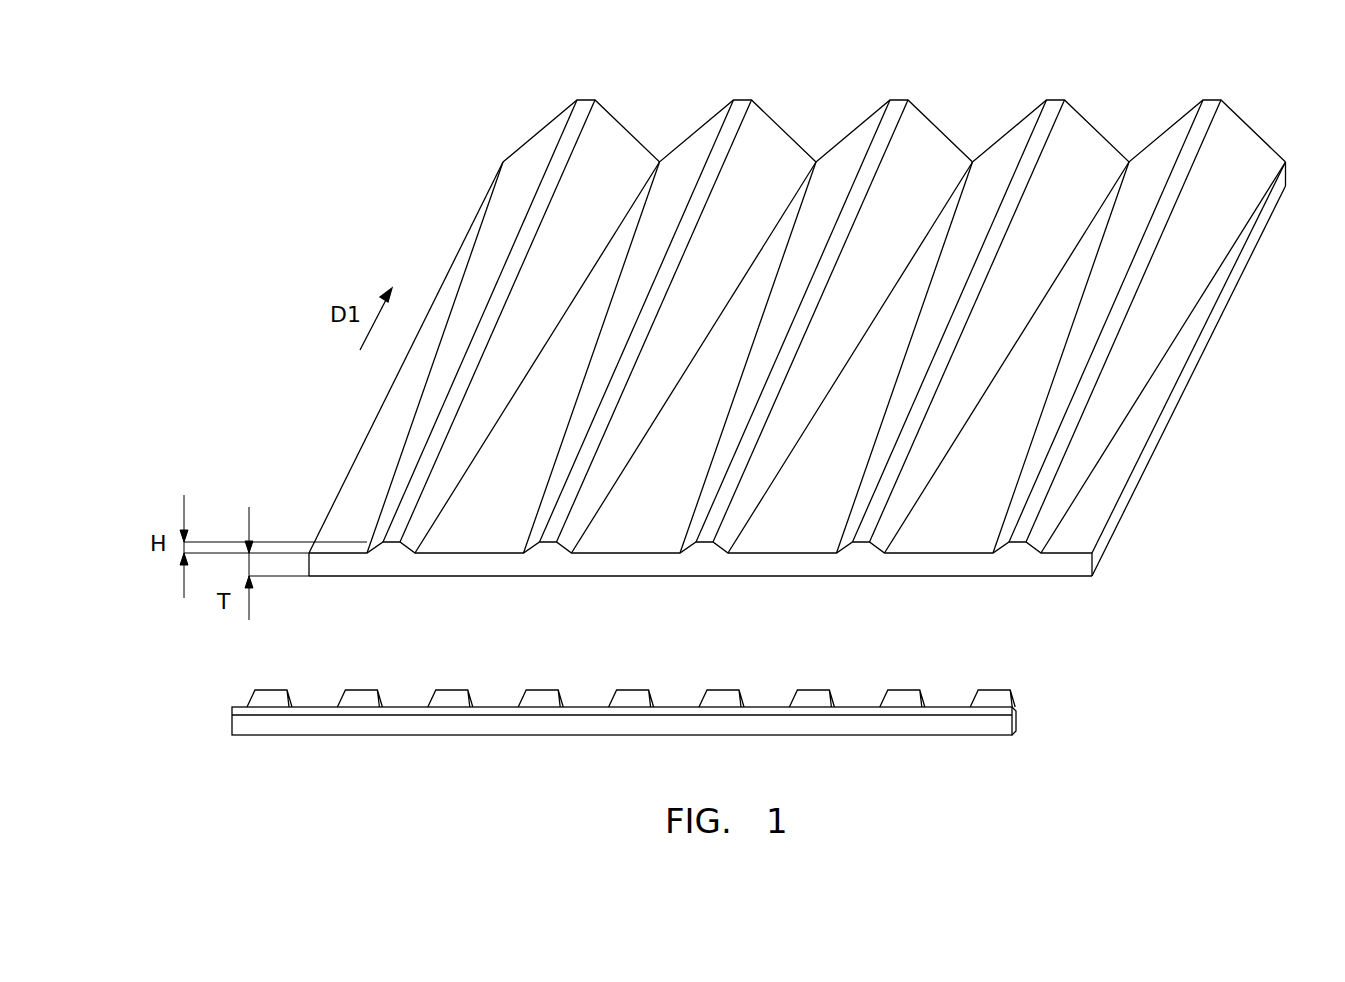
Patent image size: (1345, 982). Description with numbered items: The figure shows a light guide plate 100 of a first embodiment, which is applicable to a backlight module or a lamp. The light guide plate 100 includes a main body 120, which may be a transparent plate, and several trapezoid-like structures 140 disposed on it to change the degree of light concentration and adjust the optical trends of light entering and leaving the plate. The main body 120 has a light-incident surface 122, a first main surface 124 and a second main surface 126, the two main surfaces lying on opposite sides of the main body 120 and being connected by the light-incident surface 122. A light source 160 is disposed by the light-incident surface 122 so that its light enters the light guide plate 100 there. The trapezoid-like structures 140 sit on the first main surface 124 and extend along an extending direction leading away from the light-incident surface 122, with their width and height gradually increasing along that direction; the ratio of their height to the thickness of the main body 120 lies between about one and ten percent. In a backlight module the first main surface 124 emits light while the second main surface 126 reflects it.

The light guide plate 100 is at (272, 157).
The main body 120 is at (1208, 328).
The light-incident surface 122 is at (343, 568).
The first main surface 124 is at (742, 317).
The second main surface 126 is at (1066, 578).
The trapezoid-like structures 140 is at (933, 147).
The light source 160 is at (238, 723).